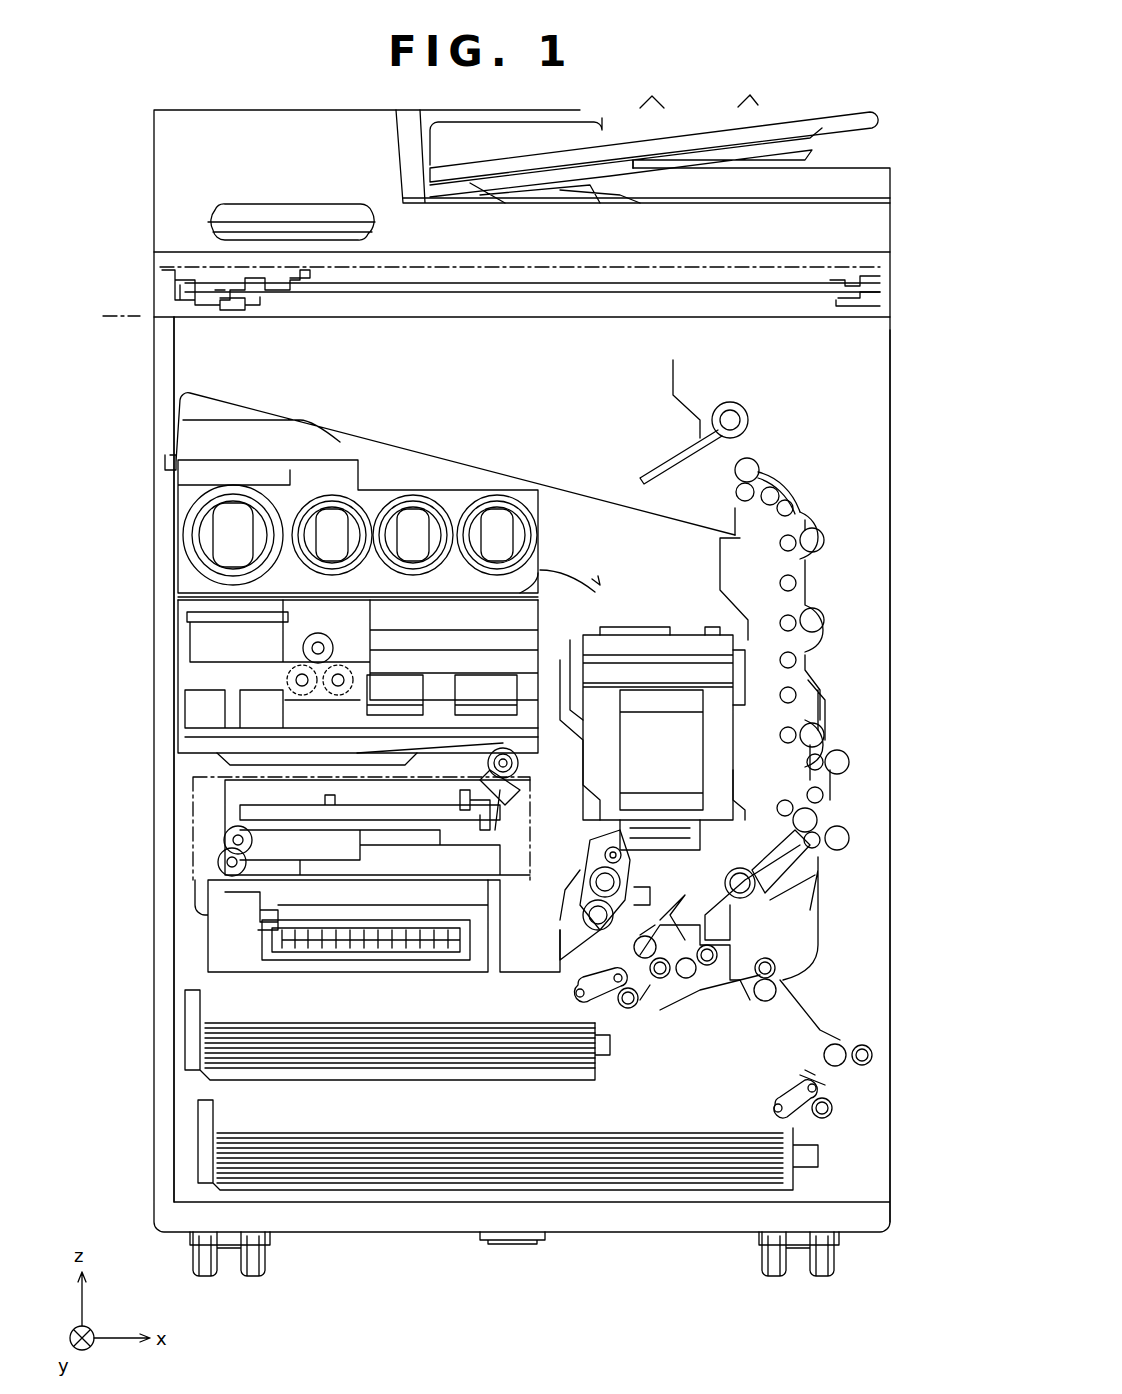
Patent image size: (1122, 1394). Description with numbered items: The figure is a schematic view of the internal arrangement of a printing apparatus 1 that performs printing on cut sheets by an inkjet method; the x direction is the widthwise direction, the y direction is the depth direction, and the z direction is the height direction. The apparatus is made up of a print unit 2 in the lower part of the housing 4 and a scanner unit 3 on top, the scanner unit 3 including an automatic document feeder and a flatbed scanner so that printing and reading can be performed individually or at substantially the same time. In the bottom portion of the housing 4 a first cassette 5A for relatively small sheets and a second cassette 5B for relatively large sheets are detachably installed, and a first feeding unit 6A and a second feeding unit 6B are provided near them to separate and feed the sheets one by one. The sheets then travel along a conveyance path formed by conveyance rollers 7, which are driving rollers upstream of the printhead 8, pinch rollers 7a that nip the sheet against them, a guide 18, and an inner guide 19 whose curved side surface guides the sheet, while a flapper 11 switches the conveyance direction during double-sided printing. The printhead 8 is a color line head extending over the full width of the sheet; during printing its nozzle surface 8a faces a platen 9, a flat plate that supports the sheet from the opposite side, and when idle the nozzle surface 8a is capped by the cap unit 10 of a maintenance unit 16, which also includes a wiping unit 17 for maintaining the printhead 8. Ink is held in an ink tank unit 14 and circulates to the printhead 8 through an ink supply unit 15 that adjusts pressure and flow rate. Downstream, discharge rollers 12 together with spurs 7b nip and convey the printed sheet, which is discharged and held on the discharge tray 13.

The printing apparatus 1 is at (851, 80).
The print unit 2 is at (78, 322).
The scanner unit 3 is at (78, 115).
The housing 4 is at (892, 400).
The first cassette 5A is at (196, 1045).
The second cassette 5B is at (202, 1152).
The first feeding unit 6A is at (625, 1008).
The second feeding unit 6B is at (830, 1098).
The conveyance rollers 7 is at (840, 836).
The pinch rollers 7a is at (700, 965).
The spurs 7b is at (797, 661).
The printhead 8 is at (690, 748).
The nozzle surface 8a is at (695, 860).
The platen 9 is at (755, 885).
The cap unit 10 is at (780, 905).
The flapper 11 is at (815, 712).
The discharge rollers 12 is at (758, 464).
The discharge tray 13 is at (462, 462).
The ink tank unit 14 is at (178, 505).
The ink supply unit 15 is at (188, 680).
The maintenance unit 16 is at (204, 927).
The wiping unit 17 is at (204, 800).
The guide 18 is at (800, 586).
The inner guide 19 is at (785, 938).